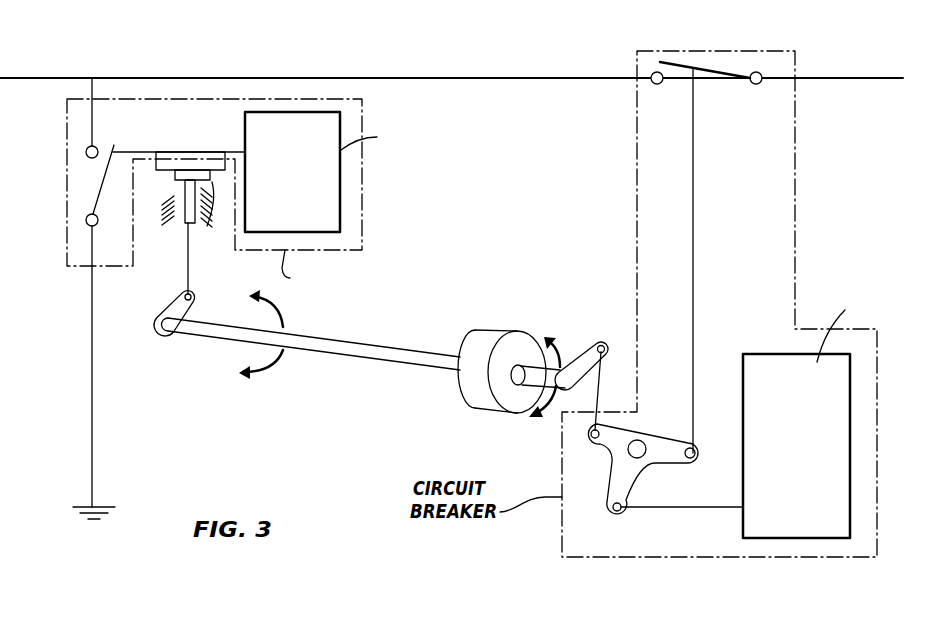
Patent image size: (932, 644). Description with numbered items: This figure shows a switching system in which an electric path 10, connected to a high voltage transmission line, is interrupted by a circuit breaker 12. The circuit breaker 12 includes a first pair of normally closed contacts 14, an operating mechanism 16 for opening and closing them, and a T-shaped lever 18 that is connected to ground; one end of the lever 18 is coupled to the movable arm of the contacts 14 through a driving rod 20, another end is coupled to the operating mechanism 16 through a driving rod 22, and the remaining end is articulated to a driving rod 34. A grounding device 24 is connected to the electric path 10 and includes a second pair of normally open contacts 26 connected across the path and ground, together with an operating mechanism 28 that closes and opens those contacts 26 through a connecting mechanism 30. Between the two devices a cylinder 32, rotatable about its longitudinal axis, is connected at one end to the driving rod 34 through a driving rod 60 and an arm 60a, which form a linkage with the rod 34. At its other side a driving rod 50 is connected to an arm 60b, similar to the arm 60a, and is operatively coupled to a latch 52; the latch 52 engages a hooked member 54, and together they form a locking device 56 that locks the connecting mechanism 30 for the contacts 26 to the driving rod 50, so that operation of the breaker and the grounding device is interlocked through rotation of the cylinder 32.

The electric path 10 is at (472, 77).
The circuit breaker 12 is at (797, 65).
The first pair of normally closed contacts 14 is at (717, 75).
The operating mechanism 16 is at (753, 353).
The T-shaped lever 18 is at (653, 440).
The driving rod 20 is at (693, 224).
The driving rod 22 is at (692, 508).
The grounding device 24 is at (362, 203).
The second pair of normally open contacts 26 is at (104, 188).
The operating mechanism 28 is at (248, 125).
The connecting mechanism 30 is at (167, 150).
The rotatable cylinder 32 is at (490, 332).
The driving rod 34 is at (603, 347).
The driving rod 50 is at (348, 357).
The latch 52 is at (178, 223).
The hooked member 54 is at (203, 227).
The locking device 56 is at (165, 199).
The driving rod 60 is at (508, 398).
The arm 60a is at (578, 367).
The arm 60b is at (160, 338).